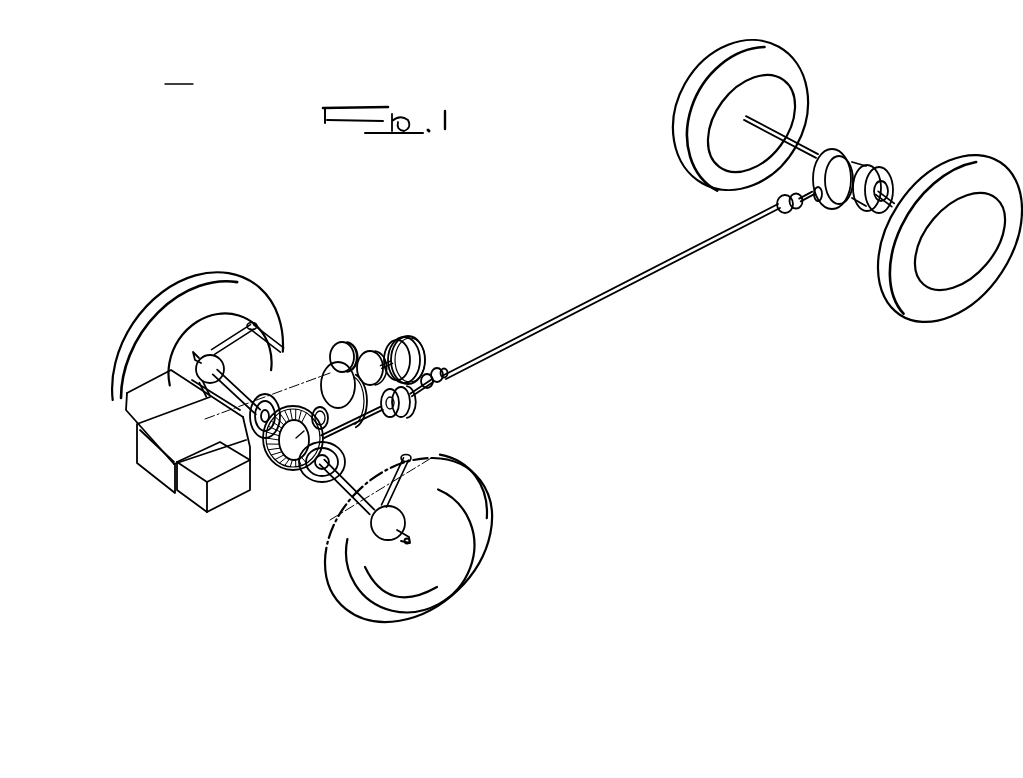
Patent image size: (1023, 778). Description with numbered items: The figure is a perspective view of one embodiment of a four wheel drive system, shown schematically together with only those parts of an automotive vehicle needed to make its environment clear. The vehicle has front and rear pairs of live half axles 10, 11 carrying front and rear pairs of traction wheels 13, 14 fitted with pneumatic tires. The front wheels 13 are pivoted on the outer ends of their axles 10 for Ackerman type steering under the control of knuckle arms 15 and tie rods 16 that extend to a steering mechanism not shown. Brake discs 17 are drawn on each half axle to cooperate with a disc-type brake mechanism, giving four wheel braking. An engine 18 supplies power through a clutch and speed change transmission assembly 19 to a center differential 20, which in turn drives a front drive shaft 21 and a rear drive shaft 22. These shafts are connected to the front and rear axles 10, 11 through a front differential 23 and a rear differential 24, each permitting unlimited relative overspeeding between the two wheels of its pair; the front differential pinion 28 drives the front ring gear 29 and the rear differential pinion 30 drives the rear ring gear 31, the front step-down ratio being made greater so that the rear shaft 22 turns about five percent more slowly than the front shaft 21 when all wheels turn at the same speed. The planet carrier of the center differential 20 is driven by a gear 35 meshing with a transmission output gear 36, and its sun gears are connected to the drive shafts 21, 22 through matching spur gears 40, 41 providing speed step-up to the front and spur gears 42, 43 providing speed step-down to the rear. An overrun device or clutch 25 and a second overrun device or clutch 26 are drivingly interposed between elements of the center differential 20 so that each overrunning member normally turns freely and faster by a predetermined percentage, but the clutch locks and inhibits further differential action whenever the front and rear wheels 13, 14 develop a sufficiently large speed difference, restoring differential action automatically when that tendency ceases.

The front live half axles 10 is at (257, 397).
The rear live half axles 11 is at (798, 148).
The front traction wheels 13 is at (133, 327).
The rear traction wheels 14 is at (673, 137).
The knuckle arms 15 is at (233, 343).
The tie rods 16 is at (278, 347).
The brake discs 17 is at (268, 405).
The engine 18 is at (155, 460).
The clutch and speed change transmission assembly 19 is at (227, 422).
The center differential 20 is at (381, 341).
The front drive shaft 21 is at (347, 442).
The rear drive shaft 22 is at (562, 317).
The front differential 23 is at (288, 410).
The rear differential 24 is at (866, 163).
The overrun device or clutch 25 is at (409, 419).
The second overrun device or clutch 26 is at (424, 341).
The front differential pinion 28 is at (340, 461).
The front differential ring gear 29 is at (308, 419).
The rear differential pinion 30 is at (817, 201).
The rear differential ring gear 31 is at (838, 207).
The gear 35 is at (330, 371).
The transmission output gear 36 is at (340, 344).
The front spur gear 40 is at (367, 360).
The front spur gear 41 is at (386, 420).
The rear spur gear 42 is at (398, 345).
The rear spur gear 43 is at (412, 407).